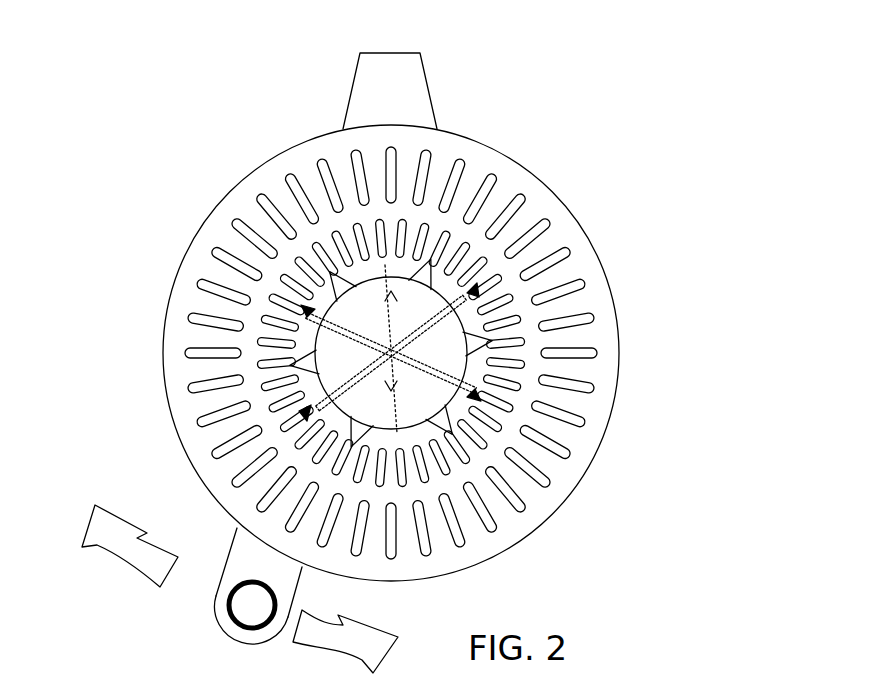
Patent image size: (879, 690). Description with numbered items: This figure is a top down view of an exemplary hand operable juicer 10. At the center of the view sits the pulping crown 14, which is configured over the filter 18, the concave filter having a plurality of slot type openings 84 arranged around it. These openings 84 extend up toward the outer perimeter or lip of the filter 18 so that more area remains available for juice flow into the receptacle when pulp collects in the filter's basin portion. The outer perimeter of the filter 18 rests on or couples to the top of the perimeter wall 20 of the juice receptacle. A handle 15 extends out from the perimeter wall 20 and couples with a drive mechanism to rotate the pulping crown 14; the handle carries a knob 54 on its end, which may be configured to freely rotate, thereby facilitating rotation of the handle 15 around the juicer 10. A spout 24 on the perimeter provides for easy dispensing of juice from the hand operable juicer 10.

The hand operable juicer 10 is at (212, 215).
The pulping crown 14 is at (487, 183).
The handle 15 is at (235, 530).
The filter 18 is at (323, 158).
The perimeter wall 20 is at (623, 347).
The spout 24 is at (402, 68).
The knob 54 is at (205, 612).
The slot type openings 84 is at (547, 255).